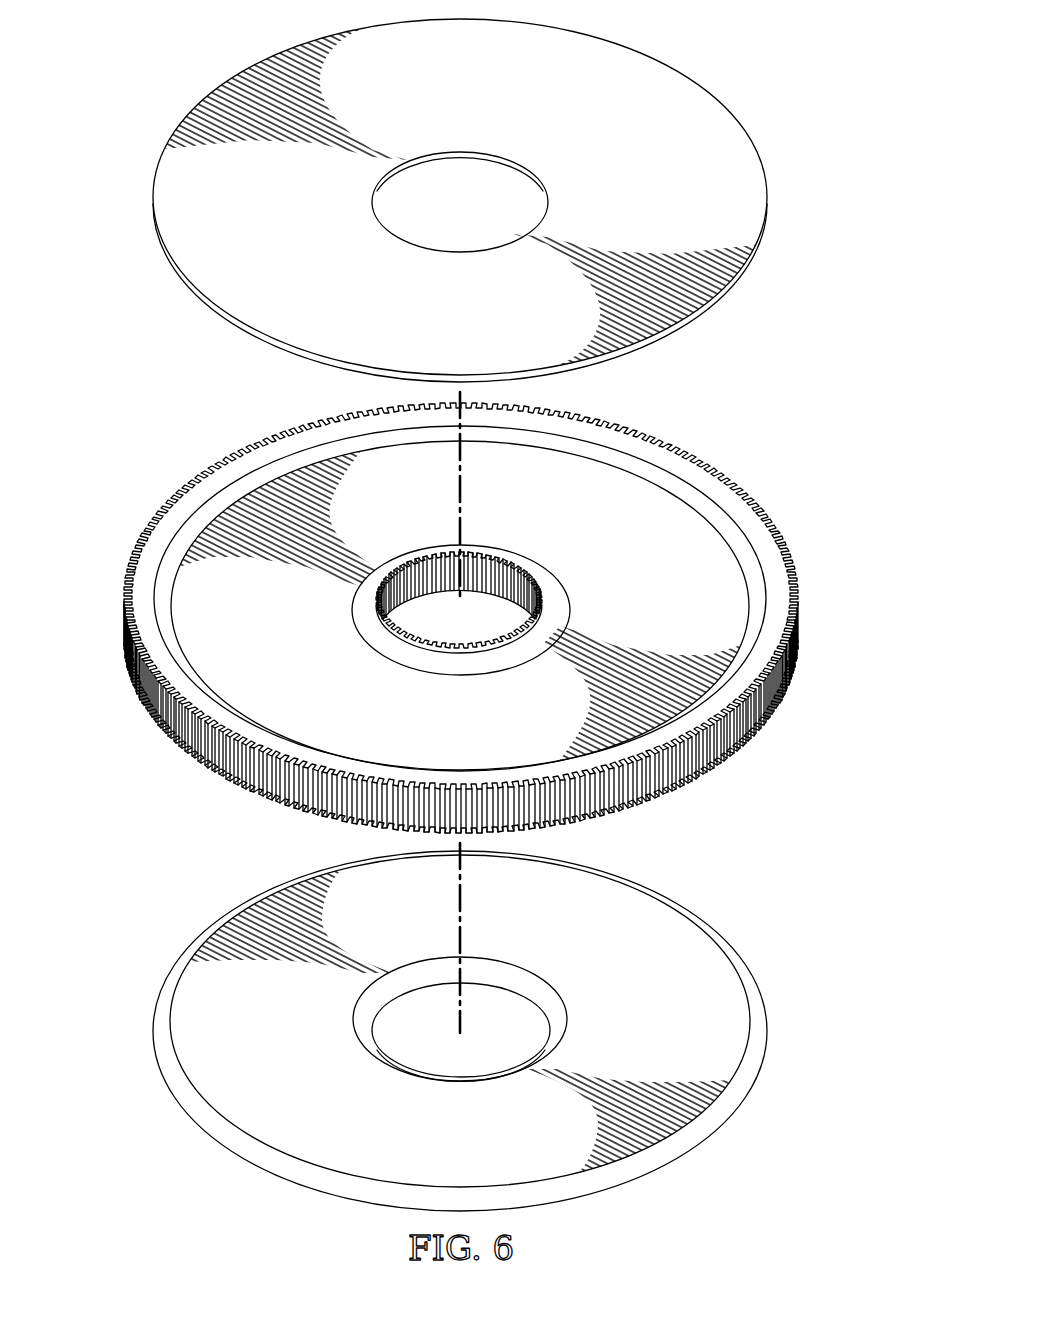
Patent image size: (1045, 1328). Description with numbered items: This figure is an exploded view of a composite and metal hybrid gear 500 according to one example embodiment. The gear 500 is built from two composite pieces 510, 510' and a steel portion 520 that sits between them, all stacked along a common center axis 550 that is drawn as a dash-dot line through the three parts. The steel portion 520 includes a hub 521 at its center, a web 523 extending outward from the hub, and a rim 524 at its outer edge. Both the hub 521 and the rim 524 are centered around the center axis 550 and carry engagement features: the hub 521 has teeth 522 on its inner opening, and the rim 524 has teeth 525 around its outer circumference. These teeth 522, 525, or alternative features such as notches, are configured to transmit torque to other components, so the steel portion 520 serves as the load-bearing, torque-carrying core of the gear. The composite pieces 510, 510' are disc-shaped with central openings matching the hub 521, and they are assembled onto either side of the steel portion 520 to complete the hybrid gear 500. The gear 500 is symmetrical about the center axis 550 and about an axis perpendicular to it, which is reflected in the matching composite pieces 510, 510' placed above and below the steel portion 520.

The gear 500 is at (146, 106).
The composite piece 510 is at (460, 200).
The composite piece 510' is at (460, 1044).
The steel portion 520 is at (425, 624).
The hub 521 is at (428, 550).
The teeth 522 is at (478, 548).
The web 523 is at (183, 594).
The rim 524 is at (125, 592).
The teeth 525 is at (653, 800).
The center axis 550 is at (464, 937).